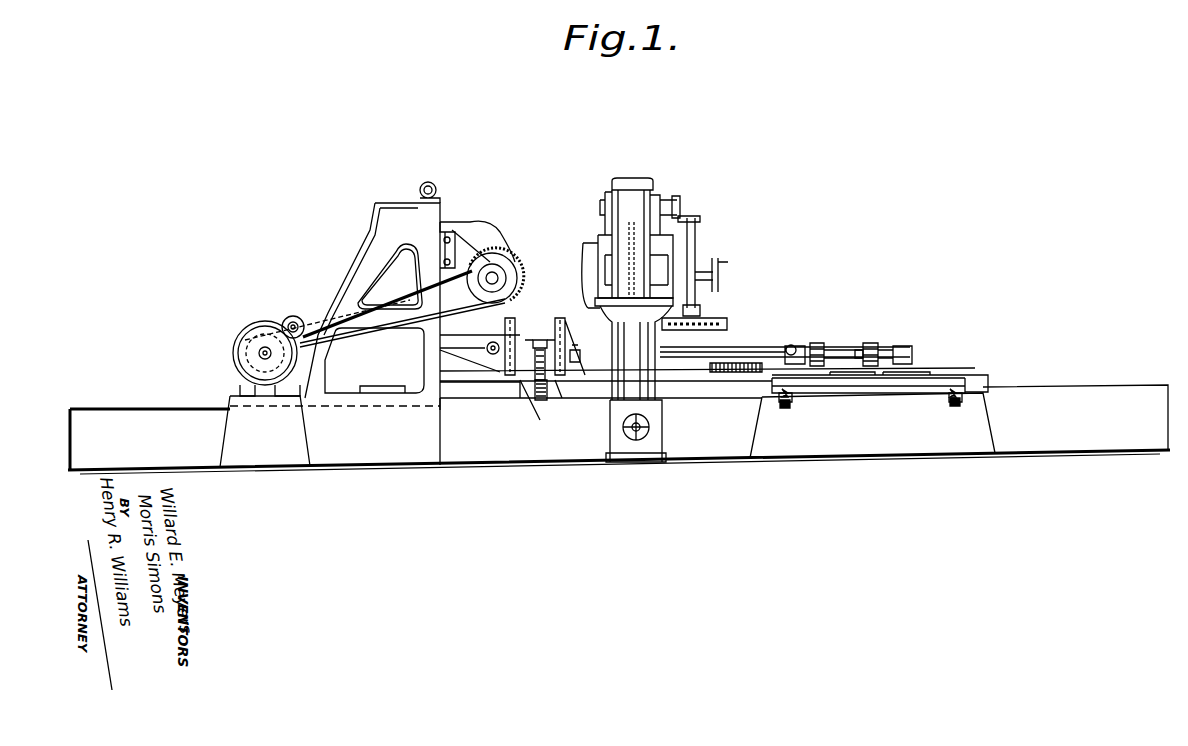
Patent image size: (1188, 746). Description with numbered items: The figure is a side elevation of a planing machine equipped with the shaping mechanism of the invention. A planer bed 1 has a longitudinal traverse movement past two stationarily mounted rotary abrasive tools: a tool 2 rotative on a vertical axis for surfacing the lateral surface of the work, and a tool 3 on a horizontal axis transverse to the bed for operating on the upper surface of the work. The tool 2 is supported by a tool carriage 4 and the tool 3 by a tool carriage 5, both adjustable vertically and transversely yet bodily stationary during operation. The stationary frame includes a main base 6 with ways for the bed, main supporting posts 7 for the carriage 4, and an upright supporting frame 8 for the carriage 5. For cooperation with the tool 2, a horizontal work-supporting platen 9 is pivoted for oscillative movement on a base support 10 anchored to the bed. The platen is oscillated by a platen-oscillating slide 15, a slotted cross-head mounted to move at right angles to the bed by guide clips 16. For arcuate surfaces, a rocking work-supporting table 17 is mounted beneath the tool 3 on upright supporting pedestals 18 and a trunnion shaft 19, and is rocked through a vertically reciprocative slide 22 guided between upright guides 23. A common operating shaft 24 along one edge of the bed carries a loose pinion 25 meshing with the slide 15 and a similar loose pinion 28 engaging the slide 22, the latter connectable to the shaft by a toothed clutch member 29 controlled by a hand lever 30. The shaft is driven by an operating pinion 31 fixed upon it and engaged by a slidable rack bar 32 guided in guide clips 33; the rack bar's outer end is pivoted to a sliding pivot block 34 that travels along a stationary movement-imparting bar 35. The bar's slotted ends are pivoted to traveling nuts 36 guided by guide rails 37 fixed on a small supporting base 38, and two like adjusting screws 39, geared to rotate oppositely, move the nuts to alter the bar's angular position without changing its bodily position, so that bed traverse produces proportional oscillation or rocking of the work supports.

The planer bed 1 is at (597, 393).
The rotary tool 2 is at (712, 320).
The rotary tool 3 is at (502, 268).
The tool carrier or carriage 4 is at (668, 262).
The tool carrier or carriage 5 is at (480, 225).
The main base 6 is at (572, 463).
The main supporting posts 7 is at (655, 378).
The upright supporting frame 8 is at (392, 222).
The work-supporting table or platen 9 is at (752, 355).
The base support 10 is at (728, 380).
The platen-oscillating slide 15 is at (828, 360).
The guide clips 16 is at (848, 360).
The rocking work-supporting table 17 is at (470, 353).
The upright supporting pedestals 18 is at (369, 333).
The trunnion shaft 19 is at (494, 342).
The vertically reciprocative slide 22 is at (542, 340).
The upright guides 23 is at (558, 318).
The operating shaft 24 is at (705, 362).
The pinion 25 is at (810, 346).
The pinion 28 is at (540, 385).
The toothed clutch member 29 is at (552, 378).
The hand lever 30 is at (580, 350).
The operating pinion 31 is at (880, 345).
The rack bar 32 is at (914, 361).
The guide clips 33 is at (860, 350).
The sliding pivot block 34 is at (872, 380).
The movement-imparting bar 35 is at (900, 386).
The traveling nuts 36 is at (950, 402).
The guide rails 37 is at (962, 398).
The small supporting base 38 is at (867, 458).
The adjusting screws 39 is at (962, 406).